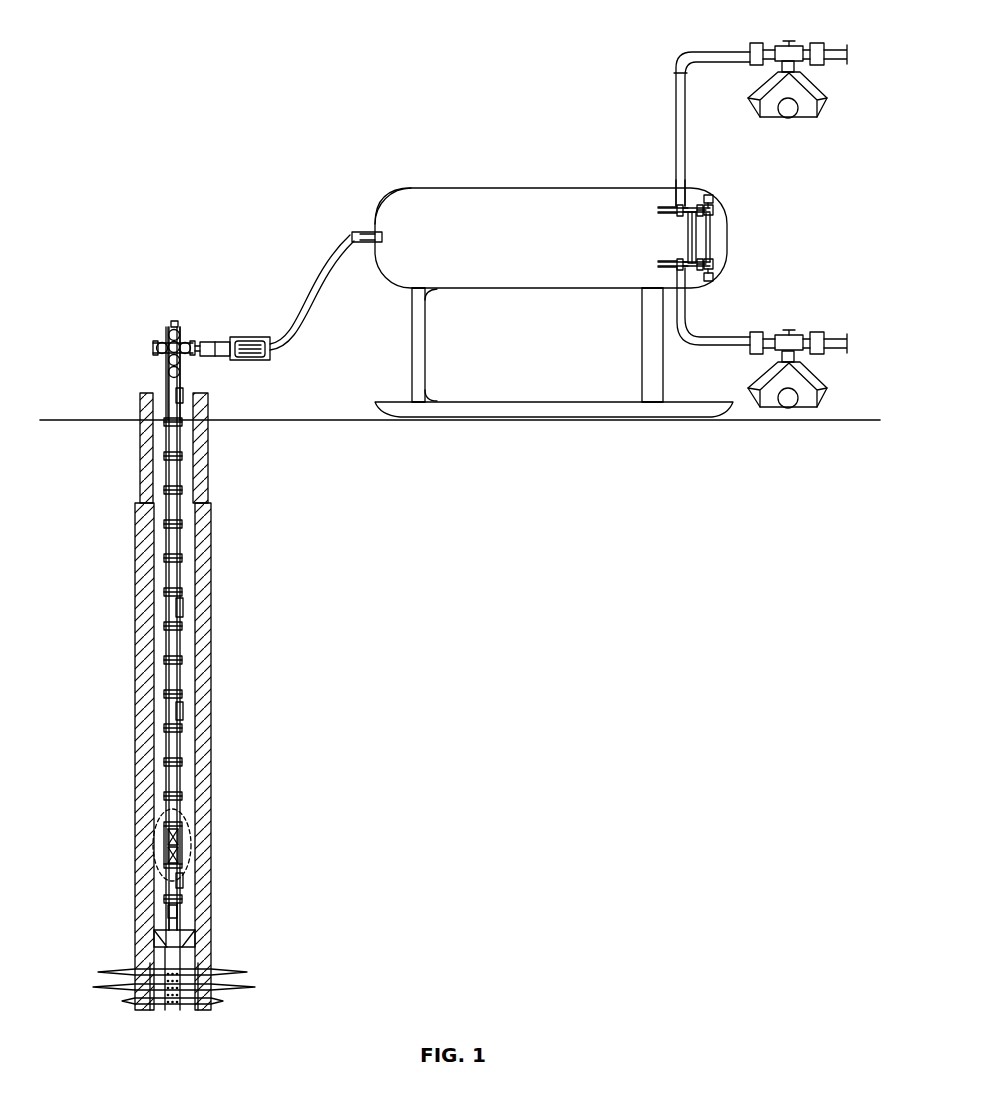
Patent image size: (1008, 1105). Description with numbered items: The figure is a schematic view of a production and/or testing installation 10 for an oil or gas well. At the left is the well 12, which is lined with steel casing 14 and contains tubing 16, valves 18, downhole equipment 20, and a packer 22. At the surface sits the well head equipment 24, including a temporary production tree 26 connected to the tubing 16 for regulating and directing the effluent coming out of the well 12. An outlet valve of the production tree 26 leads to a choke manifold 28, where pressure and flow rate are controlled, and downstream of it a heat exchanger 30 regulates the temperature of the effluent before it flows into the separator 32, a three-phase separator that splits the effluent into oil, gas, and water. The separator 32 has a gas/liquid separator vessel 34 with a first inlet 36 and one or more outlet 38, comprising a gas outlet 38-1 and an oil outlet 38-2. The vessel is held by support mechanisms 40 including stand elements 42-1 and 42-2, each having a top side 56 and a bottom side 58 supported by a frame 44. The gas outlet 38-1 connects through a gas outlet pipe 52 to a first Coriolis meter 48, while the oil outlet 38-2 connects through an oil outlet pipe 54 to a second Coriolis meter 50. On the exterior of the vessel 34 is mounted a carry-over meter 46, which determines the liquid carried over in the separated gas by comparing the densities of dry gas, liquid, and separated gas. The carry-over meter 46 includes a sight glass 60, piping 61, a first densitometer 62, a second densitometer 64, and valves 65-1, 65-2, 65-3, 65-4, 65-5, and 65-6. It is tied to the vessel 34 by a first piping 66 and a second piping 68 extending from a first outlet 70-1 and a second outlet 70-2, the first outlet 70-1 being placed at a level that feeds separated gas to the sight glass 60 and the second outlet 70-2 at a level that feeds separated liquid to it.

The production and/or testing installation 10 is at (120, 403).
The well 12 is at (234, 653).
The steel casing 14 is at (196, 698).
The tubing 16 is at (182, 505).
The valves 18 is at (196, 822).
The downhole equipment 20 is at (186, 908).
The packer 22 is at (198, 942).
The well head equipment 24 is at (152, 331).
The temporary production tree 26 is at (177, 334).
The choke manifold 28 is at (210, 341).
The heat exchanger 30 is at (249, 361).
The separator 32 is at (433, 188).
The gas/liquid separator vessel 34 is at (406, 188).
The first inlet 36 is at (361, 234).
The outlet 38 is at (686, 196).
The gas outlet 38-1 is at (677, 207).
The oil outlet 38-2 is at (680, 292).
The support mechanisms 40 is at (412, 386).
The stand element 42-1 is at (412, 327).
The stand element 42-2 is at (642, 395).
The frame 44 is at (460, 416).
The carry-over meter 46 is at (724, 224).
The first Coriolis meter 48 is at (827, 99).
The second Coriolis meter 50 is at (828, 390).
The gas outlet pipe 52 is at (726, 52).
The oil outlet pipe 54 is at (733, 344).
The top side 56 is at (430, 291).
The bottom side 58 is at (430, 400).
The sight glass 60 is at (688, 238).
The piping 61 is at (712, 252).
The first densitometer 62 is at (726, 234).
The second densitometer 64 is at (714, 269).
The valve 65-1 is at (679, 205).
The valve 65-2 is at (680, 271).
The valve 65-3 is at (710, 195).
The valve 65-4 is at (699, 271).
The valve 65-5 is at (713, 207).
The valve 65-6 is at (713, 281).
The first piping 66 is at (677, 208).
The second piping 68 is at (677, 266).
The first outlet 70-1 is at (658, 209).
The second outlet 70-2 is at (660, 264).